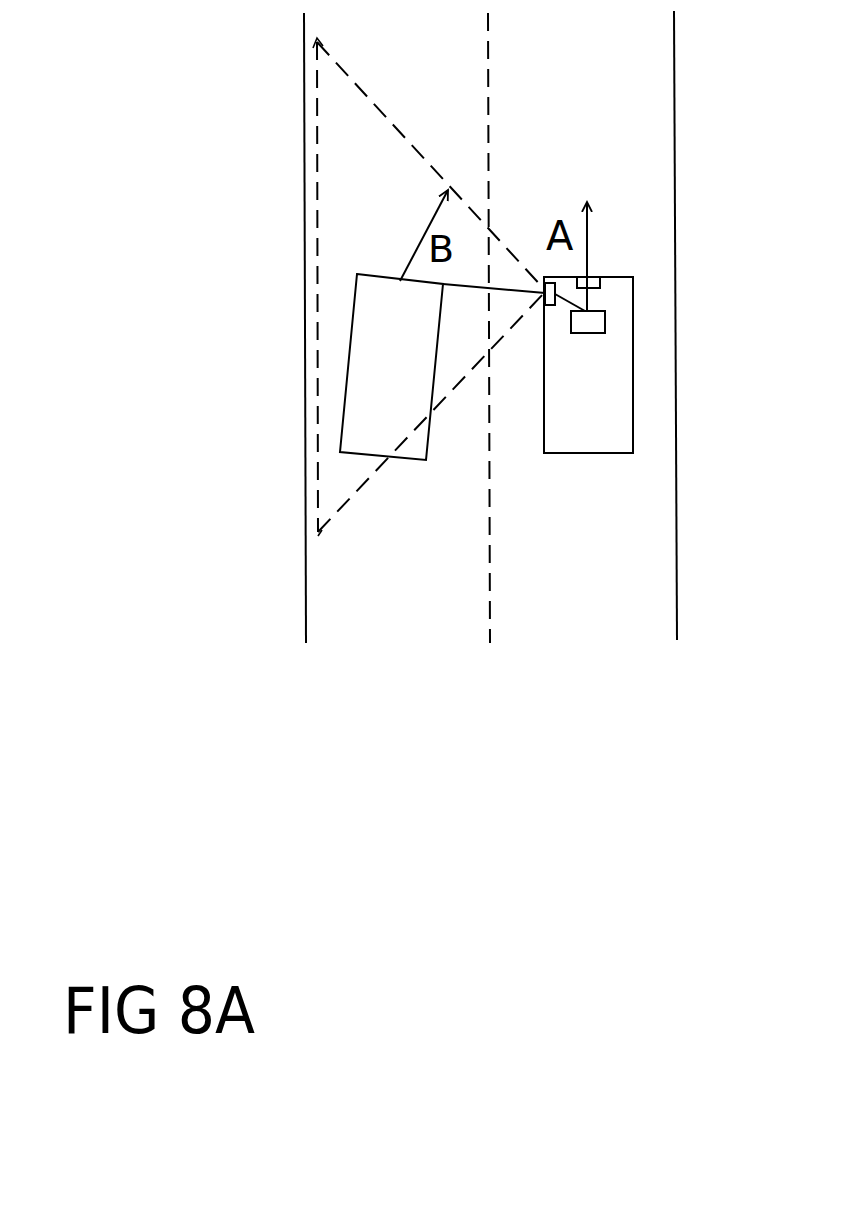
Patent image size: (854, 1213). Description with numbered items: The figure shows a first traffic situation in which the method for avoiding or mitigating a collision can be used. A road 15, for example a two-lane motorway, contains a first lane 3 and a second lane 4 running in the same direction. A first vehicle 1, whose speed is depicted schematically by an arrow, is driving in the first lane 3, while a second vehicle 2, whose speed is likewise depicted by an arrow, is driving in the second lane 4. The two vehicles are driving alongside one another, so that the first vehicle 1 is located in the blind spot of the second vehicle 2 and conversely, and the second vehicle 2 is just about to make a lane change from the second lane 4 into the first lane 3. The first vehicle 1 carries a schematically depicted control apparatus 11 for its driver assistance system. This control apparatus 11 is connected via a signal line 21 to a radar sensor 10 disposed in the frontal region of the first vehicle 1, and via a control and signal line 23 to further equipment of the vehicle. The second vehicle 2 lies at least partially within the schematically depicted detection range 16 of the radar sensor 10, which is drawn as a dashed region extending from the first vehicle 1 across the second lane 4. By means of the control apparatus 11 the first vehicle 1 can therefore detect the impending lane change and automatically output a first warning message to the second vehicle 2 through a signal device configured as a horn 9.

The first vehicle 1 is at (580, 437).
The second vehicle 2 is at (378, 313).
The first lane 3 is at (663, 563).
The second lane 4 is at (327, 567).
The horn 9 is at (593, 283).
The radar sensor 10 is at (547, 305).
The control apparatus 11 is at (588, 323).
The road 15 is at (394, 673).
The detection range 16 is at (355, 115).
The signal line 21 is at (556, 296).
The control and signal line 23 is at (560, 296).